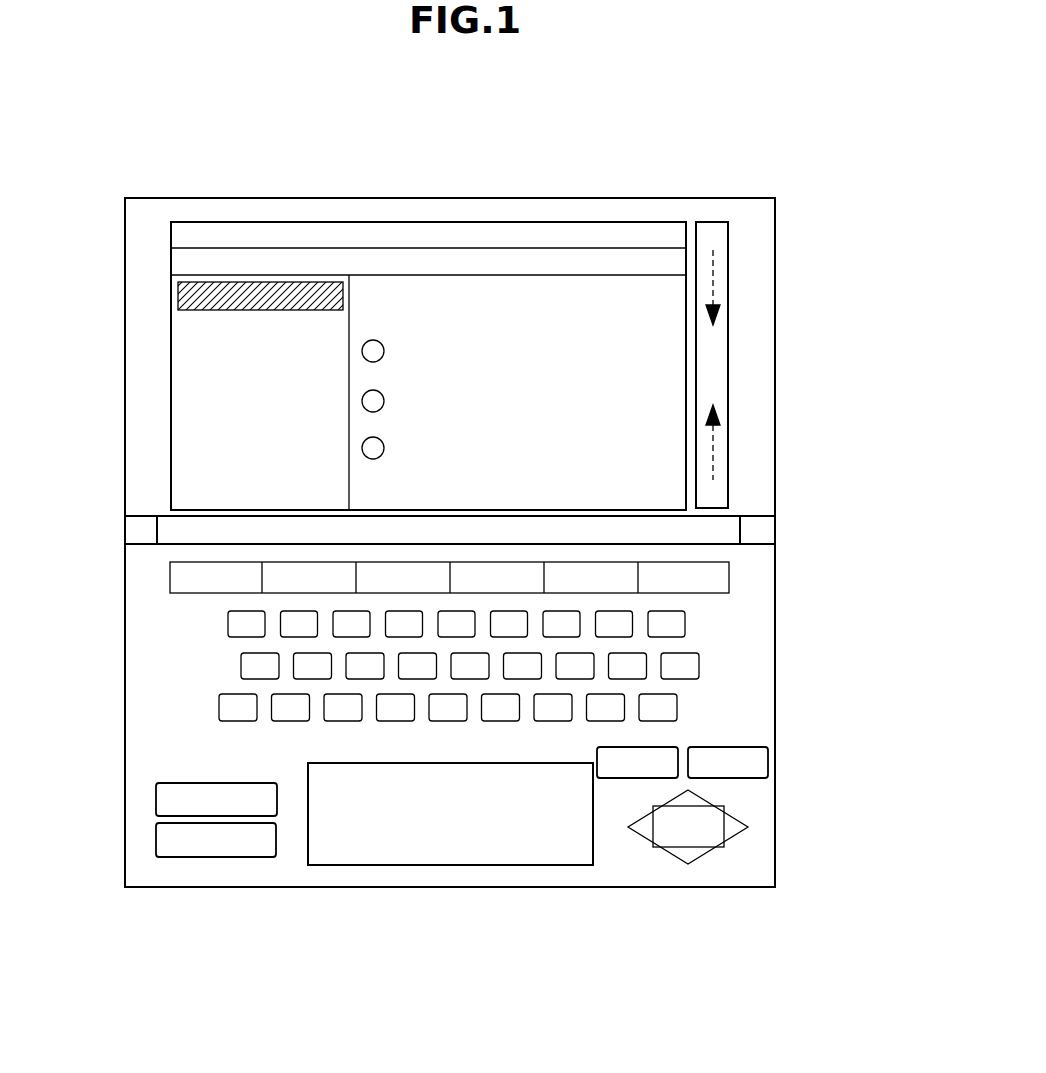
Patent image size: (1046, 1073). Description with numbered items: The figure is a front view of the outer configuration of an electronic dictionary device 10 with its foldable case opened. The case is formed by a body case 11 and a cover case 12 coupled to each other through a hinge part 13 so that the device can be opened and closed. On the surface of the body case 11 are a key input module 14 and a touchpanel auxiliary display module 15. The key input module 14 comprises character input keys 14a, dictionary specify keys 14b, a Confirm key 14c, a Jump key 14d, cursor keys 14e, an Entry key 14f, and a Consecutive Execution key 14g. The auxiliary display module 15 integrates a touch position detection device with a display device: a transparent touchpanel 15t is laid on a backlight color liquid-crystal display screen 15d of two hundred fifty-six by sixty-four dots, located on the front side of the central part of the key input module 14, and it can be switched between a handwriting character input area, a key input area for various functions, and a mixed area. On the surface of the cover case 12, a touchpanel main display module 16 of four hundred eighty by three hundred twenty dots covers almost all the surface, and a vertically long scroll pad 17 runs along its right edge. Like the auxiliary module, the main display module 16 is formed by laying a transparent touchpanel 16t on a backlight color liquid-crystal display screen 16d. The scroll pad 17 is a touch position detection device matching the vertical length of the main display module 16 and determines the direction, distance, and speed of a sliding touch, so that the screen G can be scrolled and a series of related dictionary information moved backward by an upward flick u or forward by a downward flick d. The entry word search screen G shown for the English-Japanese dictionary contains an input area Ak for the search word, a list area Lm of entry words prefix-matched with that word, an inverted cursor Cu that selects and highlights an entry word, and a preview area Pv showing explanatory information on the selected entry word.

The electronic dictionary device 10 is at (450, 482).
The body case 11 is at (417, 715).
The cover case 12 is at (418, 357).
The hinge part 13 is at (418, 530).
The key input module 14 is at (524, 714).
The character input keys 14a is at (527, 660).
The dictionary specify keys 14b is at (502, 570).
The Confirm key 14c is at (761, 762).
The Jump key 14d is at (716, 784).
The cursor keys 14e is at (731, 830).
The Entry key 14f is at (169, 799).
The Consecutive Execution key 14g is at (165, 840).
The touchpanel auxiliary display module 15 is at (450, 877).
The liquid-crystal display screen 15d is at (450, 858).
The transparent touchpanel 15t is at (450, 858).
The touchpanel main display module 16 is at (428, 310).
The liquid-crystal display screen 16d is at (428, 328).
The transparent touchpanel 16t is at (428, 328).
The scroll pad 17 is at (762, 365).
The entry word search screen G is at (428, 204).
The input area Ak is at (428, 218).
The inverted cursor Cu is at (203, 296).
The list area Lm is at (205, 392).
The preview area Pv is at (597, 373).
The downward flick d is at (761, 287).
The upward flick u is at (761, 442).